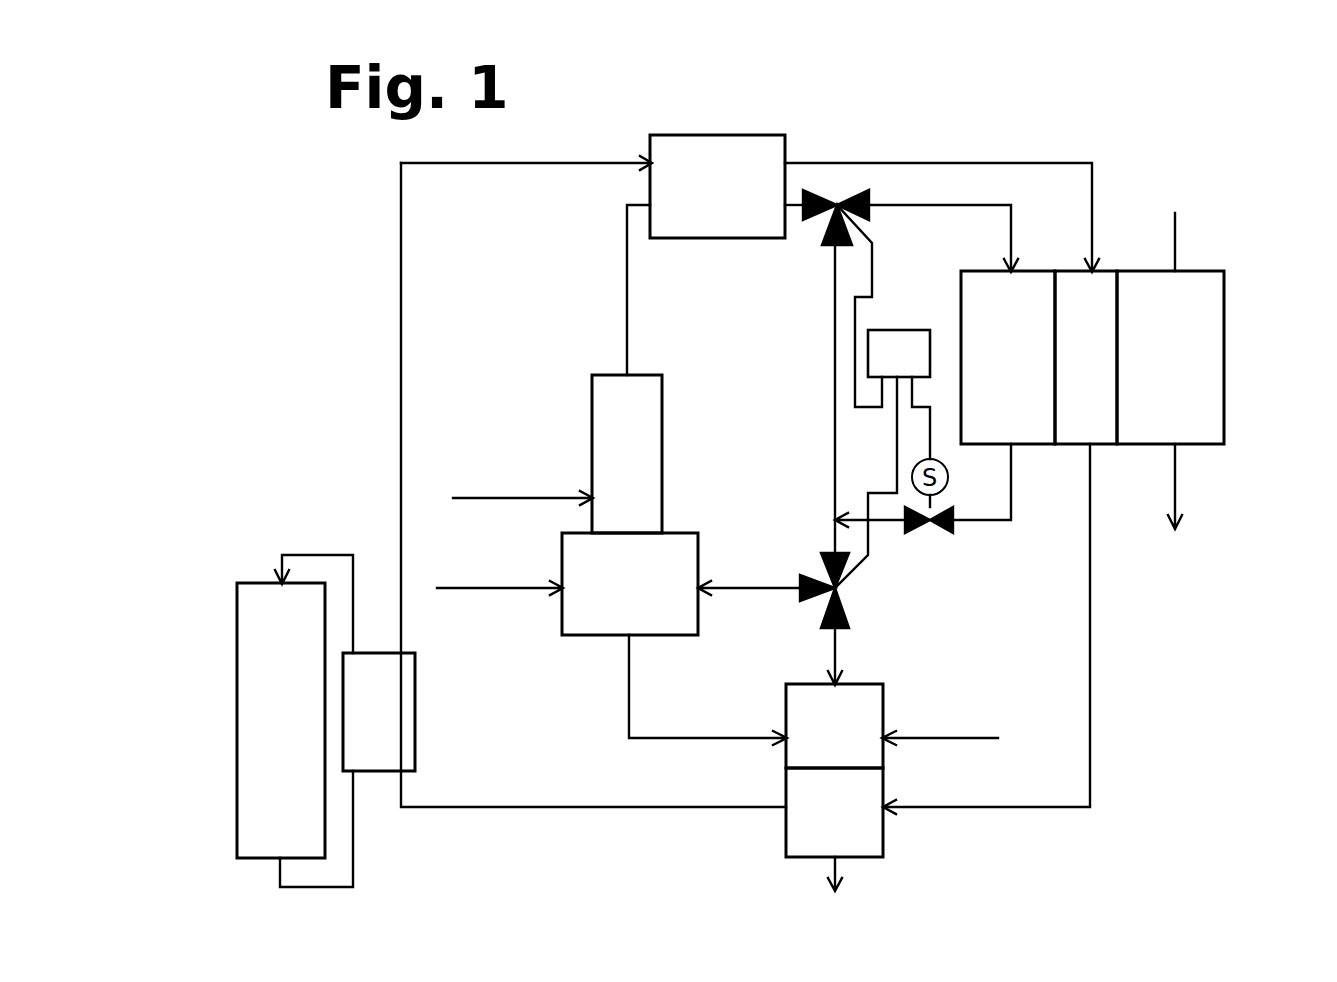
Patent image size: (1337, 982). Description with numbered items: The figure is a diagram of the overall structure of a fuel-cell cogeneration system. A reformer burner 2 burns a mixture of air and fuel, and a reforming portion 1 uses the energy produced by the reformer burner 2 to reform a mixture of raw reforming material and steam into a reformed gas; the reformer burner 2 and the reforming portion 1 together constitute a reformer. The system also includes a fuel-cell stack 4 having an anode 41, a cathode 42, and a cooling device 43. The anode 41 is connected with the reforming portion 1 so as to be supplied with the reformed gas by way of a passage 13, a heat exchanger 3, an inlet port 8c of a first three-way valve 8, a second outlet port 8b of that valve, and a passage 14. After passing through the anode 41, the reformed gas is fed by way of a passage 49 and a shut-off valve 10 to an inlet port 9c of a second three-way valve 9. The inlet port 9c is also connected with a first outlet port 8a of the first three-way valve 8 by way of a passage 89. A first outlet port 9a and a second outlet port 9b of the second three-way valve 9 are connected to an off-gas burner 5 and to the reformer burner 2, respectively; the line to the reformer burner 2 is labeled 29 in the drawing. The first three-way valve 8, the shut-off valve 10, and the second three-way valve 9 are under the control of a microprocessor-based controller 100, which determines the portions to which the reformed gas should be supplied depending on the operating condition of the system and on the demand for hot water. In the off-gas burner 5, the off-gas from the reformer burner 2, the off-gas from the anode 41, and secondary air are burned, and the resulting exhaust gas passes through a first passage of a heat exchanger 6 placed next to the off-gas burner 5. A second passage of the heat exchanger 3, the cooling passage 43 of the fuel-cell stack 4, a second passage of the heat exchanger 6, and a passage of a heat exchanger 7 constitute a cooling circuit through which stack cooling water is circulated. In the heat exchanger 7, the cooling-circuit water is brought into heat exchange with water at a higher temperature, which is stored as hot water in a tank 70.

The reforming portion 1 is at (662, 398).
The reformer burner 2 is at (590, 635).
The heat exchanger 3 is at (773, 135).
The fuel-cell stack 4 is at (1101, 297).
The off-gas burner 5 is at (786, 706).
The heat exchanger 6 is at (786, 832).
The heat exchanger 7 is at (415, 708).
The first three-way valve 8 is at (860, 192).
The first outlet port 8a is at (830, 247).
The second outlet port 8b is at (870, 205).
The inlet port 8c is at (808, 196).
The second three-way valve 9 is at (821, 579).
The first outlet port 9a is at (840, 630).
The second outlet port 9b is at (800, 586).
The inlet port 9c is at (822, 560).
The shut-off valve 10 is at (930, 533).
The passage 13 is at (627, 275).
The passage 14 is at (940, 206).
The combustor supply line 29 is at (745, 592).
The anode 41 is at (961, 303).
The cathode 42 is at (1210, 320).
The cooling device 43 is at (1100, 445).
The passage 49 is at (988, 522).
The tank 70 is at (263, 583).
The passage 89 is at (835, 385).
The controller 100 is at (899, 353).